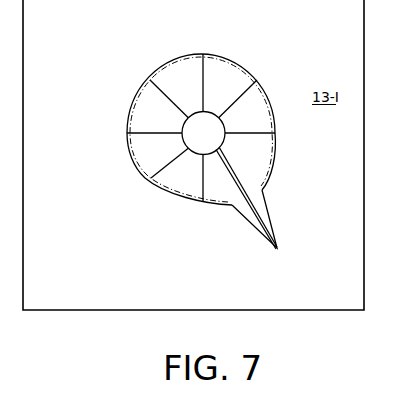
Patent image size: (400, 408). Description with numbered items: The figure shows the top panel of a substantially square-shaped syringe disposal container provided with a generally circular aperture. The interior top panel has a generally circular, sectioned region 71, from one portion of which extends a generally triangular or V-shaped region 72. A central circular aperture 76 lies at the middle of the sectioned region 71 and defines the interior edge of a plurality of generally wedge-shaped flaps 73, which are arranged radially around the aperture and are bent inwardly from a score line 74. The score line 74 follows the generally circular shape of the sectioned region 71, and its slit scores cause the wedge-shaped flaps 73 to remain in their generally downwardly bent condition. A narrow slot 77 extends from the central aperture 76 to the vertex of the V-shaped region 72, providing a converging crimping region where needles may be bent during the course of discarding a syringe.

The sectioned region 71 is at (262, 87).
The V-shaped region 72 is at (267, 207).
The wedge-shaped flaps 73 is at (155, 112).
The score line 74 is at (163, 187).
The central circular aperture 76 is at (215, 144).
The narrow slot 77 is at (242, 185).